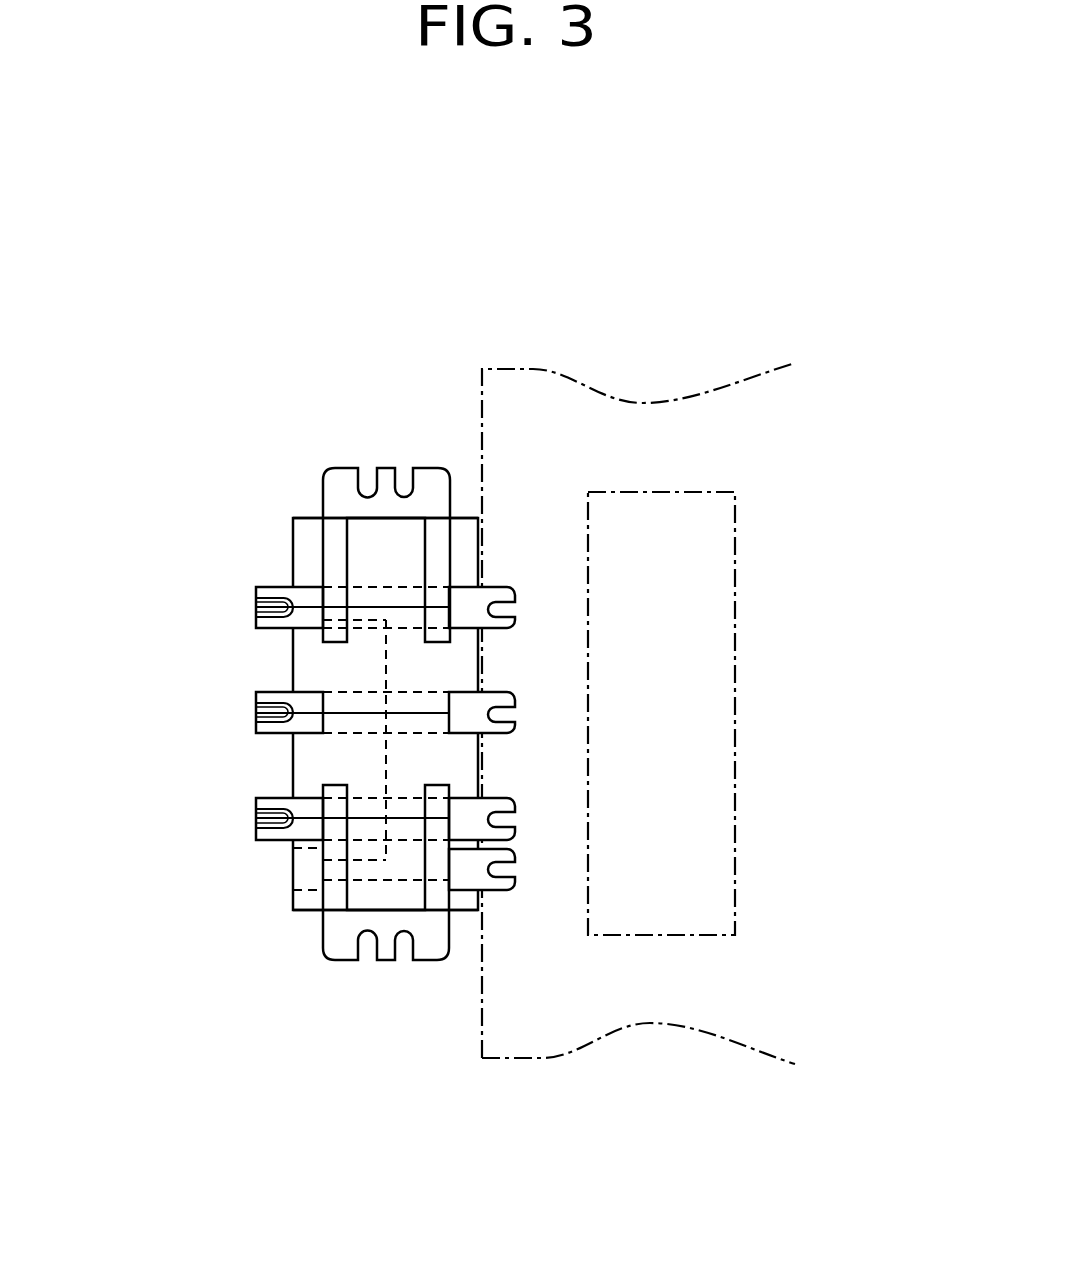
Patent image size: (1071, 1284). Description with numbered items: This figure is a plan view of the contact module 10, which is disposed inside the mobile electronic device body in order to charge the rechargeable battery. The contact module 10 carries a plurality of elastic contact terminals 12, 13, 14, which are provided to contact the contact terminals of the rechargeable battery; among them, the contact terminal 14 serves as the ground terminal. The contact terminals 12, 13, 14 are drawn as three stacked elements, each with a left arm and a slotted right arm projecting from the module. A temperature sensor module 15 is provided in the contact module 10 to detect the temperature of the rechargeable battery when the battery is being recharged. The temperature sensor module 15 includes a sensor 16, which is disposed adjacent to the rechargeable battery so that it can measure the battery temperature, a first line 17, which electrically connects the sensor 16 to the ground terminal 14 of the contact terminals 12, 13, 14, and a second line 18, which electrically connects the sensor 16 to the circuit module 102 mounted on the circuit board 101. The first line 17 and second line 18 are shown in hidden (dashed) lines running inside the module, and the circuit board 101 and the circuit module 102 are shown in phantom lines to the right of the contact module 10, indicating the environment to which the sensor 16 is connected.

The contact module 10 is at (258, 462).
The elastic contact terminal 12 is at (257, 818).
The elastic contact terminal 13 is at (257, 712).
The ground terminal 14 is at (257, 607).
The temperature sensor module 15 is at (288, 869).
The sensor 16 is at (308, 890).
The first line 17 is at (386, 653).
The second line 18 is at (392, 880).
The circuit board 101 is at (548, 1012).
The circuit module 102 is at (660, 912).